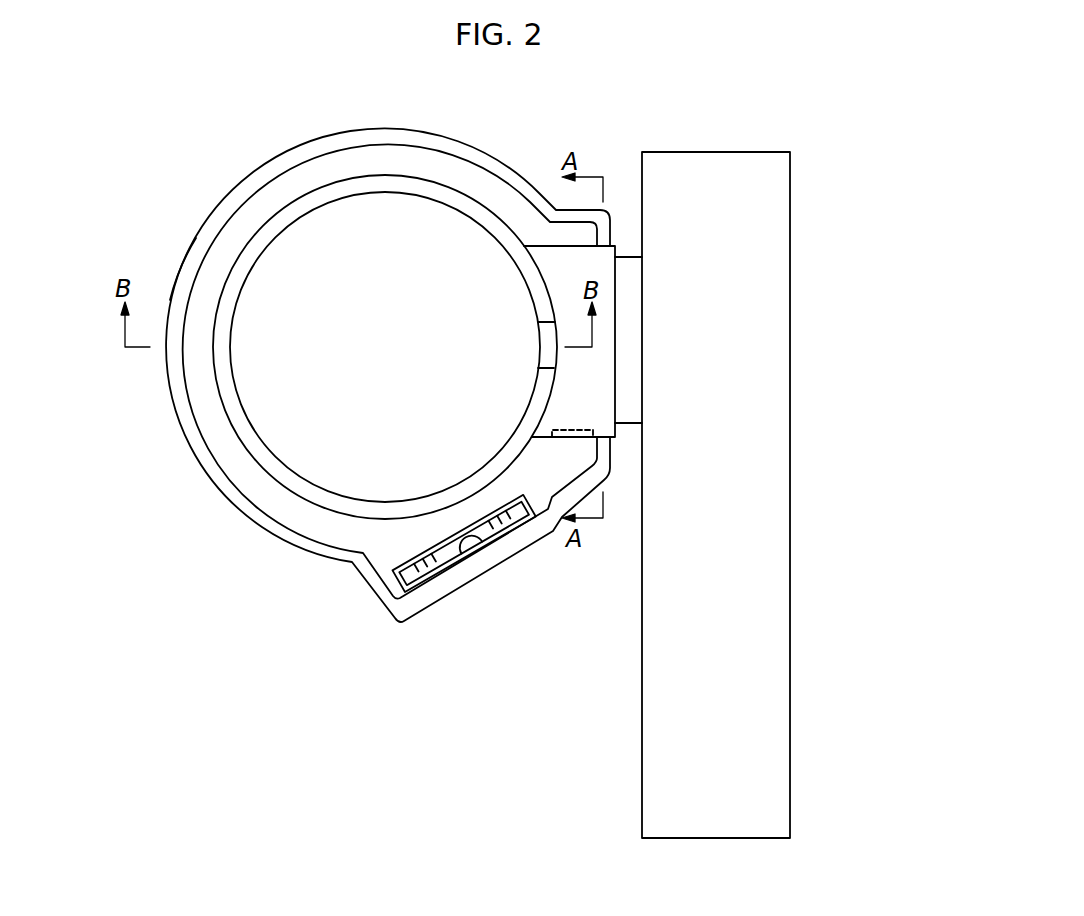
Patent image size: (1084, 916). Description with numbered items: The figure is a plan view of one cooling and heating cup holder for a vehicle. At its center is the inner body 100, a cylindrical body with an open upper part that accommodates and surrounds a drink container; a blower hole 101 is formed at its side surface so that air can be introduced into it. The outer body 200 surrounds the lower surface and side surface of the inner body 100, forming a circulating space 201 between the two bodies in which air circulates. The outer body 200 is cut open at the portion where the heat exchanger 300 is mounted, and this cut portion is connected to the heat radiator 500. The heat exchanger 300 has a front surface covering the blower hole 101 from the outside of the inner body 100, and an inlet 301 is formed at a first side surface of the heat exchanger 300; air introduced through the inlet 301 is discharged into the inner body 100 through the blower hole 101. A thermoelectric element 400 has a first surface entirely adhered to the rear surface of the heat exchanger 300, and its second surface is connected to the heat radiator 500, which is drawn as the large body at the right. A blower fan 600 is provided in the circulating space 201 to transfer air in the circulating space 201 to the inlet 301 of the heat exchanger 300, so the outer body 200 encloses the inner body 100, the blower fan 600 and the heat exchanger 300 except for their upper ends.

The inner body 100 is at (292, 477).
The blower hole 101 is at (553, 357).
The outer body 200 is at (212, 462).
The circulating space 201 is at (218, 267).
The heat exchanger 300 is at (597, 387).
The inlet 301 is at (580, 427).
The thermoelectric element 400 is at (627, 297).
The heat radiator 500 is at (760, 593).
The blower fan 600 is at (440, 567).